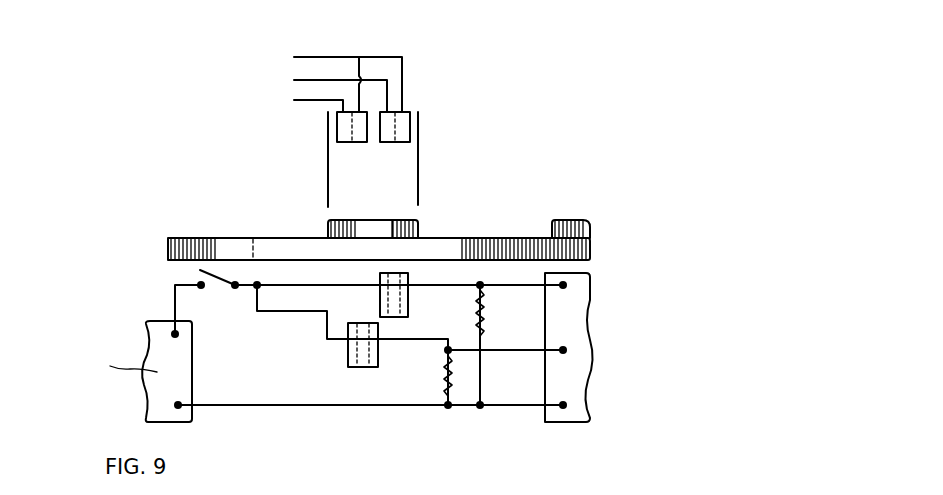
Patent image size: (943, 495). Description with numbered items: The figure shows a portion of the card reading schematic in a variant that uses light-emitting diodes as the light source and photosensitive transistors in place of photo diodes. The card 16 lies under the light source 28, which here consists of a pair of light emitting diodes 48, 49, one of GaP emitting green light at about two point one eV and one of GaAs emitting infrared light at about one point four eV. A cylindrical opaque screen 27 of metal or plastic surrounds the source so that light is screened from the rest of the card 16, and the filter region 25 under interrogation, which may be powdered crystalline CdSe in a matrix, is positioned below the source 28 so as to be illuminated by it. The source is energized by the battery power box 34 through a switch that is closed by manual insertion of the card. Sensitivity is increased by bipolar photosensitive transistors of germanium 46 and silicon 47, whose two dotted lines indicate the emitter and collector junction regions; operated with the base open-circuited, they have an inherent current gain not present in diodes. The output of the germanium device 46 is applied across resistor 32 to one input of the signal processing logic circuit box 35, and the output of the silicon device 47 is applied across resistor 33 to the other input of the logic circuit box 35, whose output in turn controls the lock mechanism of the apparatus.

The card 16 is at (290, 238).
The filter region 25 is at (378, 229).
The cylindrical opaque screen 27 is at (328, 172).
The light source 28 is at (413, 68).
The resistor 32 is at (446, 378).
The resistor 33 is at (482, 322).
The battery power box 34 is at (148, 402).
The signal processing logic circuit box 35 is at (578, 360).
The germanium photosensitive transistor 46 is at (348, 357).
The silicon photosensitive transistor 47 is at (408, 303).
The light emitting diode 48 is at (340, 128).
The light emitting diode 49 is at (404, 117).